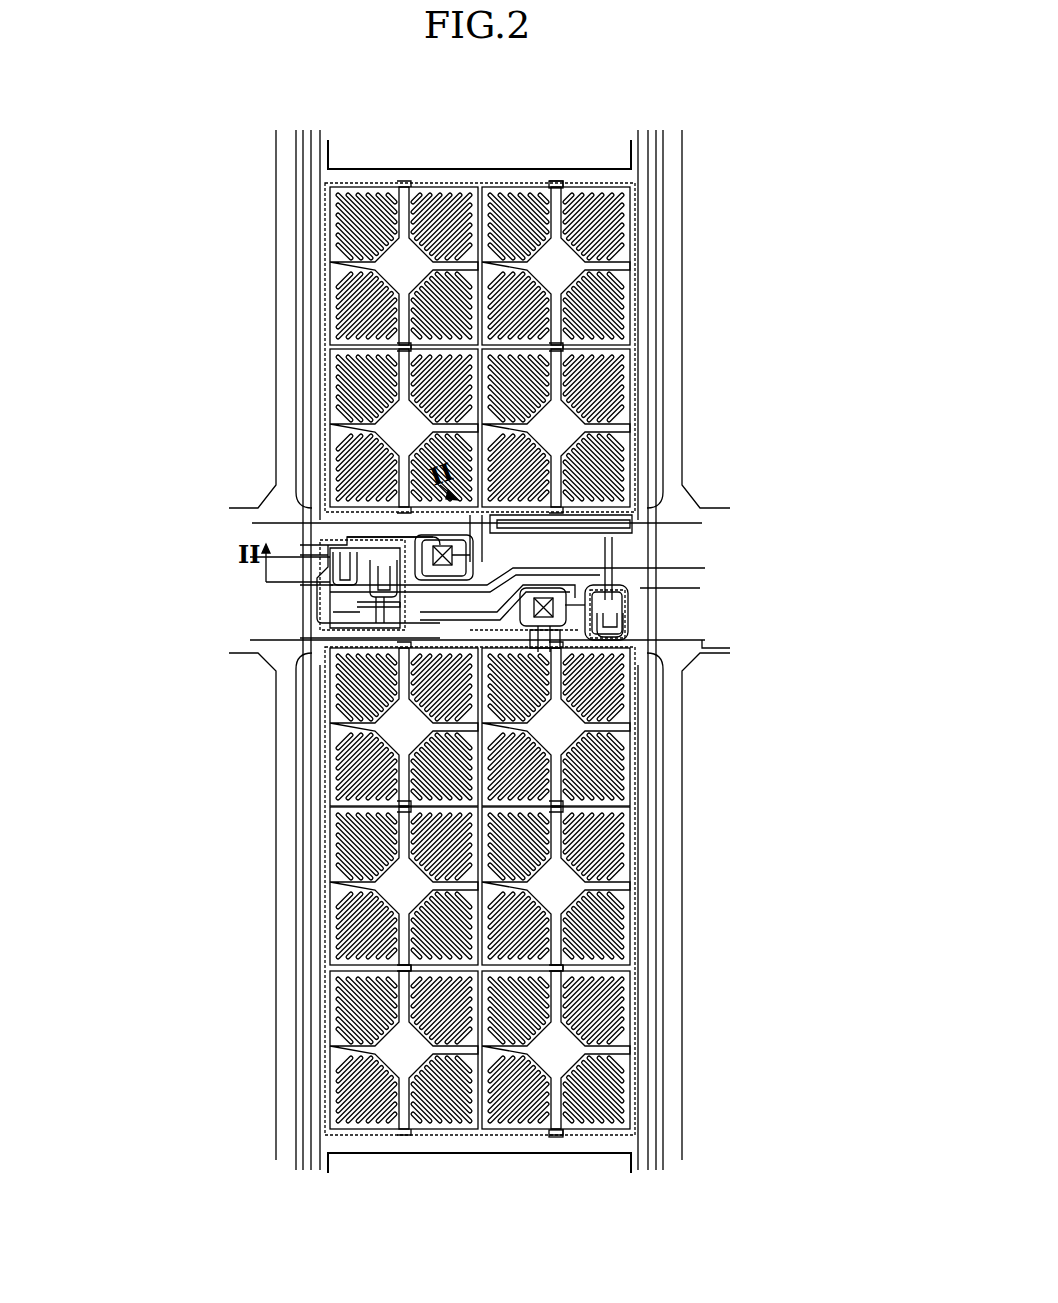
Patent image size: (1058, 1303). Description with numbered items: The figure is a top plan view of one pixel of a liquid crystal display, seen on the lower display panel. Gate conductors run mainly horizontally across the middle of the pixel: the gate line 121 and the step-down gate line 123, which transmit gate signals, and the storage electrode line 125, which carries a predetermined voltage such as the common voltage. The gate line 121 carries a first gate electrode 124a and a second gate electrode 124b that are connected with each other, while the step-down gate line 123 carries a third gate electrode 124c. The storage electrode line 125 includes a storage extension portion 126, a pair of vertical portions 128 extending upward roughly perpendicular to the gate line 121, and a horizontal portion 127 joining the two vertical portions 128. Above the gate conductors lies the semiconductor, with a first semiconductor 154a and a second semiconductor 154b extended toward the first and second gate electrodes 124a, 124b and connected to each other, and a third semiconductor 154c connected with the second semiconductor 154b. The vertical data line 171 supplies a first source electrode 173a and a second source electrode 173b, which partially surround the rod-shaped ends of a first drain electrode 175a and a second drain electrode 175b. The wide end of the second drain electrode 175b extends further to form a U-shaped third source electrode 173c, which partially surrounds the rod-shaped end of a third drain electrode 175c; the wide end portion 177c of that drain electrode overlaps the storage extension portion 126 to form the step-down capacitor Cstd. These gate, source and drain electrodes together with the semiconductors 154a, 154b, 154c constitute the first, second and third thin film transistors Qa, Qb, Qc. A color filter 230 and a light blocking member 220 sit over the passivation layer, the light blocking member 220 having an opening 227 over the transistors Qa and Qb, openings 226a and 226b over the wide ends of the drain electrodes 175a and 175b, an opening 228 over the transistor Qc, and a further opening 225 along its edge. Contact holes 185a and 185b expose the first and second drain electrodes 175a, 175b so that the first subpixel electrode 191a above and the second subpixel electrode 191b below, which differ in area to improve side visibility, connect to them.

The gate line 121 is at (680, 567).
The step-down gate line 123 is at (700, 641).
The first gate electrode 124a is at (380, 622).
The second gate electrode 124b is at (400, 540).
The third gate electrode 124c is at (625, 620).
The storage electrode line 125 is at (690, 524).
The storage extension portion 126 is at (660, 545).
The horizontal portion 127 is at (571, 185).
The vertical portions 128 is at (636, 348).
The first semiconductor 154a is at (340, 575).
The second semiconductor 154b is at (490, 636).
The third semiconductor 154c is at (612, 676).
The data line 171 is at (300, 292).
The first source electrode 173a is at (330, 611).
The second source electrode 173b is at (470, 520).
The third source electrode 173c is at (630, 652).
The first drain electrode 175a is at (332, 562).
The second drain electrode 175b is at (390, 600).
The third drain electrode 175c is at (615, 598).
The wide end portion 177c is at (655, 510).
The contact hole 185a is at (538, 612).
The contact hole 185b is at (556, 640).
The first subpixel electrode 191a is at (631, 395).
The second subpixel electrode 191b is at (631, 868).
The light blocking member 220 is at (688, 244).
The opening of light blocking member 225 is at (665, 292).
The opening 226a is at (435, 518).
The opening 226b is at (556, 690).
The opening 227 is at (332, 598).
The opening 228 is at (612, 612).
The color filter 230 is at (275, 263).
The first thin film transistor Qa is at (285, 618).
The second thin film transistor Qb is at (317, 466).
The third thin film transistor Qc is at (708, 650).
The step-down capacitor Cstd is at (690, 502).